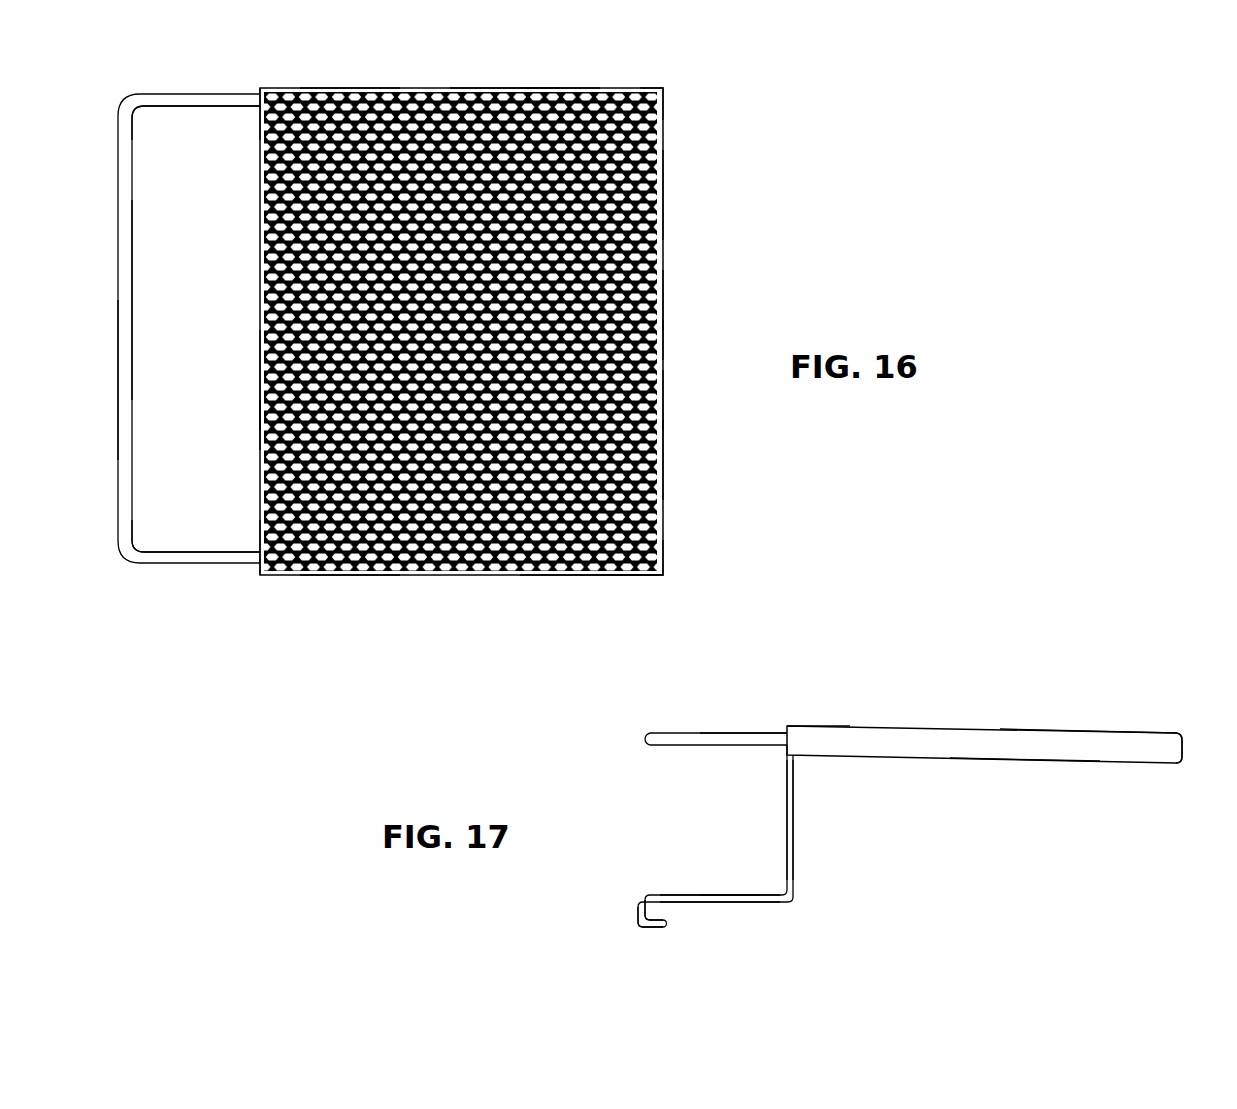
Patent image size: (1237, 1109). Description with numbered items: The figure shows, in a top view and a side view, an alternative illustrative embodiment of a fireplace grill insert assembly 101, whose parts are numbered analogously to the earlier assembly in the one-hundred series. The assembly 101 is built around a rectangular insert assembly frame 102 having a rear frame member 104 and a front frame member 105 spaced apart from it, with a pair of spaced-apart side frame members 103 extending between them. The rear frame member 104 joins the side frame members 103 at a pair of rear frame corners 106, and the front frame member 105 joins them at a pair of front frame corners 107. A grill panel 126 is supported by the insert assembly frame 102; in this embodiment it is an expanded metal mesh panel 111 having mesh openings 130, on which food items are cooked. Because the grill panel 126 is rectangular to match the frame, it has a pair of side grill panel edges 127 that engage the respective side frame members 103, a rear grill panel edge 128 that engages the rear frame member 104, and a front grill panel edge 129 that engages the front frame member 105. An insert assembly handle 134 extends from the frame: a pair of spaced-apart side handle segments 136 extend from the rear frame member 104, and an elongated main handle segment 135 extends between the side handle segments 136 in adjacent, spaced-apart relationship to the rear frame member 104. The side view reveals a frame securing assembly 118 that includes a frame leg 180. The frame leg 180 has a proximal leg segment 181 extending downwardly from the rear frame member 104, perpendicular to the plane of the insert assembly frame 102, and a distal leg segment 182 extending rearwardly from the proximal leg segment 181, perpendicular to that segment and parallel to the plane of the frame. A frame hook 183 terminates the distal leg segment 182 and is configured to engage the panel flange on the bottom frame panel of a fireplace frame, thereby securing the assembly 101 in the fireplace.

In FIG. 16, the fireplace grill insert assembly 101 is at (103, 87).
In FIG. 17, the fireplace grill insert assembly 101 is at (705, 683).
In FIG. 16, the insert assembly frame 102 is at (453, 583).
In FIG. 17, the insert assembly frame 102 is at (931, 712).
In FIG. 16, the side frame members 103 is at (585, 578).
In FIG. 17, the side frame members 103 is at (1018, 769).
In FIG. 16, the rear frame member 104 is at (514, 84).
In FIG. 16, the front frame member 105 is at (670, 298).
In FIG. 16, the rear frame corners 106 is at (258, 88).
In FIG. 17, the rear frame corners 106 is at (797, 722).
In FIG. 16, the front frame corners 107 is at (665, 90).
In FIG. 17, the front frame corners 107 is at (1150, 748).
In FIG. 16, the expanded metal mesh panel 111 is at (560, 90).
In FIG. 17, the expanded metal mesh panel 111 is at (1075, 745).
In FIG. 17, the frame securing assembly 118 is at (826, 851).
In FIG. 16, the grill panel 126 is at (670, 191).
In FIG. 16, the side grill panel edges 127 is at (350, 88).
In FIG. 16, the rear grill panel edge 128 is at (258, 268).
In FIG. 16, the front grill panel edge 129 is at (663, 333).
In FIG. 16, the mesh openings 130 is at (663, 385).
In FIG. 16, the insert assembly handle 134 is at (115, 305).
In FIG. 17, the insert assembly handle 134 is at (666, 753).
In FIG. 16, the main handle segment 135 is at (122, 385).
In FIG. 16, the side handle segments 136 is at (218, 100).
In FIG. 17, the side handle segments 136 is at (730, 746).
In FIG. 17, the frame leg 180 is at (703, 880).
In FIG. 17, the proximal leg segment 181 is at (795, 795).
In FIG. 17, the distal leg segment 182 is at (748, 903).
In FIG. 17, the frame hook 183 is at (638, 908).